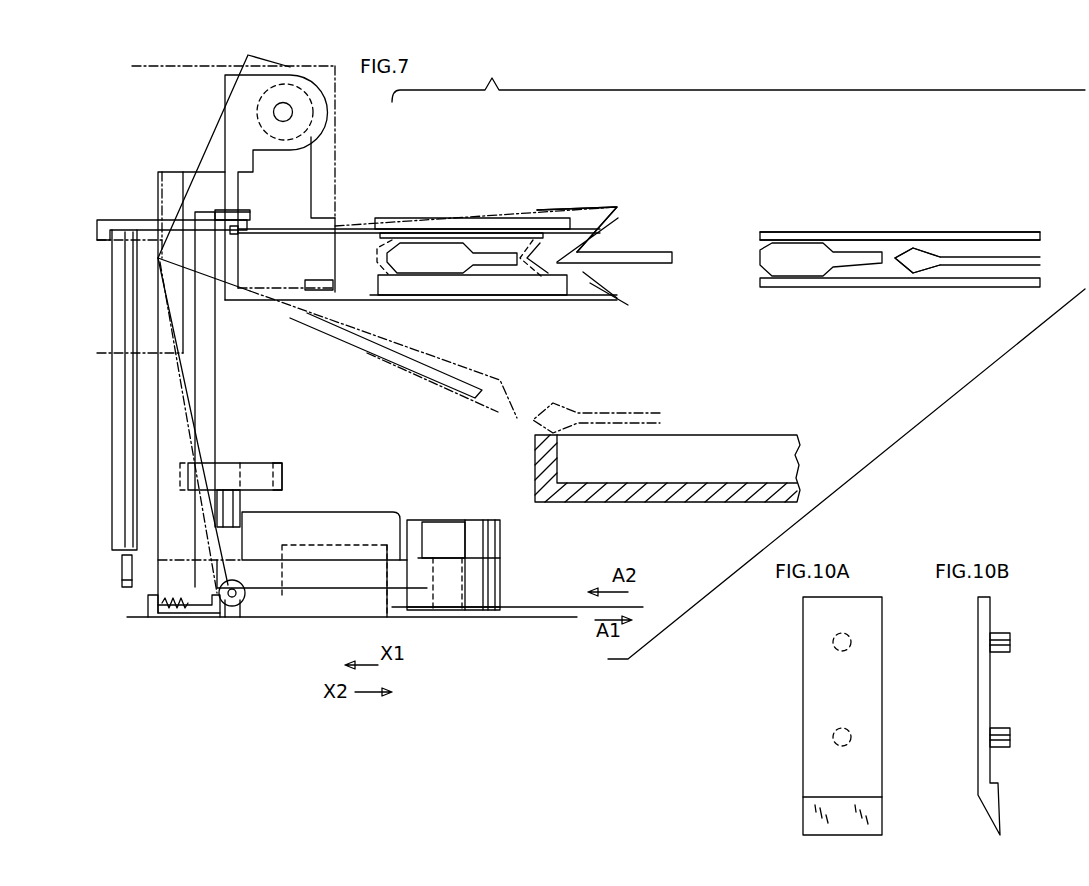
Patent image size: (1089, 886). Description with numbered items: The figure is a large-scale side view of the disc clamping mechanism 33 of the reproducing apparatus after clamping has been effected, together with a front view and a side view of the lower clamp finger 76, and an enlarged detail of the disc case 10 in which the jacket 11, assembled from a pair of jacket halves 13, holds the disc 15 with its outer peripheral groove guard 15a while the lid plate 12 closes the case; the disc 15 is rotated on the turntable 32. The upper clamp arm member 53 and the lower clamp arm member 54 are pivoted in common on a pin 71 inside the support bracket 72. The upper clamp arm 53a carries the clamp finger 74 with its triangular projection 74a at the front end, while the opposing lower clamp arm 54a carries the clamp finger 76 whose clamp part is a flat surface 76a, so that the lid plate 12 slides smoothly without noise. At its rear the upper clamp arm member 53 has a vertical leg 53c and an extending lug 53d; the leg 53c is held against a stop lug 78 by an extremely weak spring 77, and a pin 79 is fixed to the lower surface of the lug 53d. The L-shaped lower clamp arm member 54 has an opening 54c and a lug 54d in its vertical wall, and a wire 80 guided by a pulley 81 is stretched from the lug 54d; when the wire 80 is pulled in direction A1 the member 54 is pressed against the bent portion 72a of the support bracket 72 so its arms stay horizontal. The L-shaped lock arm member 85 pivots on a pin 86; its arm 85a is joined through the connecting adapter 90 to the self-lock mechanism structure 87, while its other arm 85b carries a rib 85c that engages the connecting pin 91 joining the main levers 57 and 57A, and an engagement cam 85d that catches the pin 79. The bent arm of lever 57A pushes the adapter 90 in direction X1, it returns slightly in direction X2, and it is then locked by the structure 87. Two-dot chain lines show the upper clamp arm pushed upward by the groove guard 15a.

In FIG. 7, the disc case 10 is at (903, 224).
In FIG. 7, the jacket 11 is at (846, 232).
In FIG. 7, the lid plate 12 is at (440, 270).
In FIG. 7, the jacket halves 13 is at (975, 232).
In FIG. 7, the disc 15 is at (637, 262).
In FIG. 7, the outer peripheral groove guard 15a is at (537, 235).
In FIG. 7, the turntable 32 is at (690, 500).
In FIG. 7, the disc clamping mechanism 33 is at (442, 124).
In FIG. 7, the upper clamp arm member 53 is at (313, 190).
In FIG. 7, the upper clamp arm 53a is at (450, 222).
In FIG. 7, the leg 53c is at (190, 418).
In FIG. 7, the extending lug 53d is at (125, 222).
In FIG. 7, the lower clamp arm member 54 is at (270, 292).
In FIG. 7, the lower clamp arm 54a is at (512, 298).
In FIG. 7, the opening 54c is at (240, 215).
In FIG. 7, the lug 54d is at (225, 258).
In FIG. 7, the main lever 57 is at (258, 463).
In FIG. 7, the main lever 57A is at (282, 483).
In FIG. 7, the pin 71 is at (293, 113).
In FIG. 7, the support bracket 72 is at (180, 65).
In FIG. 7, the bent portion 72a is at (313, 302).
In FIG. 7, the clamp finger 74 is at (505, 228).
In FIG. 7, the triangular-cross-sectional projection 74a is at (588, 246).
In FIG. 7, the clamp finger 76 is at (536, 285).
In FIG. 10A, the clamp finger 76 is at (786, 624).
In FIG. 10B, the clamp finger 76 is at (971, 624).
In FIG. 7, the flat surface 76a is at (615, 296).
In FIG. 10A, the flat surface 76a is at (808, 765).
In FIG. 10B, the flat surface 76a is at (982, 767).
In FIG. 7, the spring 77 is at (168, 608).
In FIG. 7, the stop lug 78 is at (148, 612).
In FIG. 7, the pin 79 is at (122, 557).
In FIG. 7, the wire 80 is at (188, 392).
In FIG. 7, the pulley 81 is at (242, 605).
In FIG. 7, the lock arm member 85 is at (486, 576).
In FIG. 7, the arm 85a is at (440, 525).
In FIG. 7, the arm 85b is at (300, 598).
In FIG. 7, the rib 85c is at (235, 543).
In FIG. 7, the engagement cam 85d is at (122, 580).
In FIG. 7, the pin 86 is at (445, 605).
In FIG. 7, the self-lock mechanism structure 87 is at (345, 598).
In FIG. 7, the connecting adapter 90 is at (495, 540).
In FIG. 7, the connecting pin 91 is at (240, 500).